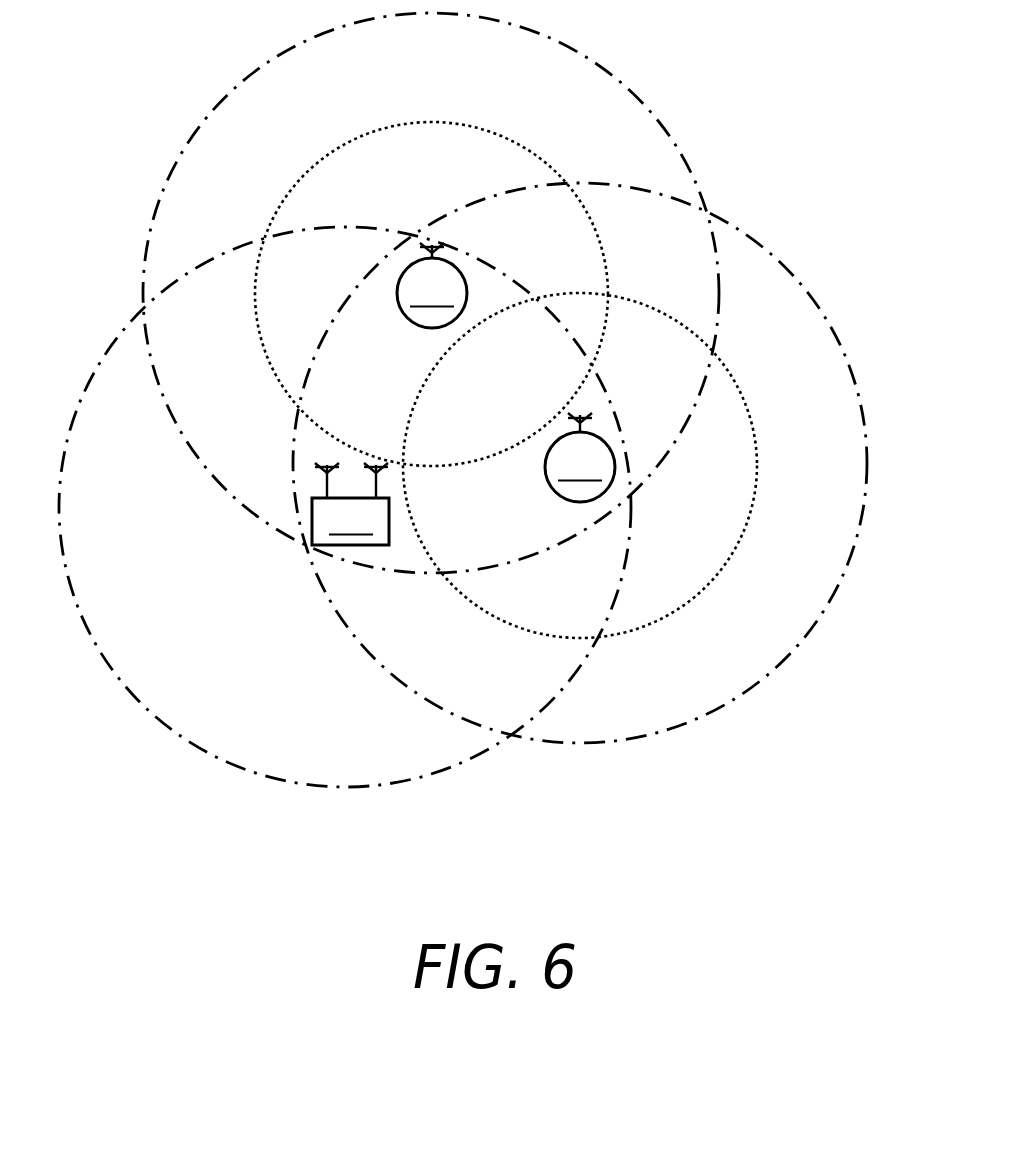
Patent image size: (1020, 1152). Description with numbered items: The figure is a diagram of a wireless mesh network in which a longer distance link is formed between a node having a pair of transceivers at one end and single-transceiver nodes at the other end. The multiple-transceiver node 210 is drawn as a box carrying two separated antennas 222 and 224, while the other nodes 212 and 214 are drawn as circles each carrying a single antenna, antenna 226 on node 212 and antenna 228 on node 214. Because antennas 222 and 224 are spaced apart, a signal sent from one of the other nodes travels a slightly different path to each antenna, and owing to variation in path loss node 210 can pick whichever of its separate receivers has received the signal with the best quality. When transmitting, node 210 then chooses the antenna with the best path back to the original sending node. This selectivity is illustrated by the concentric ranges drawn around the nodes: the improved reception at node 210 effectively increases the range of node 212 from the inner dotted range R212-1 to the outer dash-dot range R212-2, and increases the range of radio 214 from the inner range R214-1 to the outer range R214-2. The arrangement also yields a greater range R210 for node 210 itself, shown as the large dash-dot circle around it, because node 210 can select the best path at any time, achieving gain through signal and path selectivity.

The node 210 is at (350, 521).
The node 212 is at (432, 293).
The node 214 is at (580, 467).
The antenna 222 is at (322, 484).
The antenna 224 is at (374, 487).
The antenna 226 is at (447, 253).
The antenna 228 is at (584, 424).
The range R210 is at (347, 789).
The range R212-1 is at (473, 126).
The range R212-2 is at (583, 51).
The range R214-1 is at (730, 374).
The range R214-2 is at (768, 250).